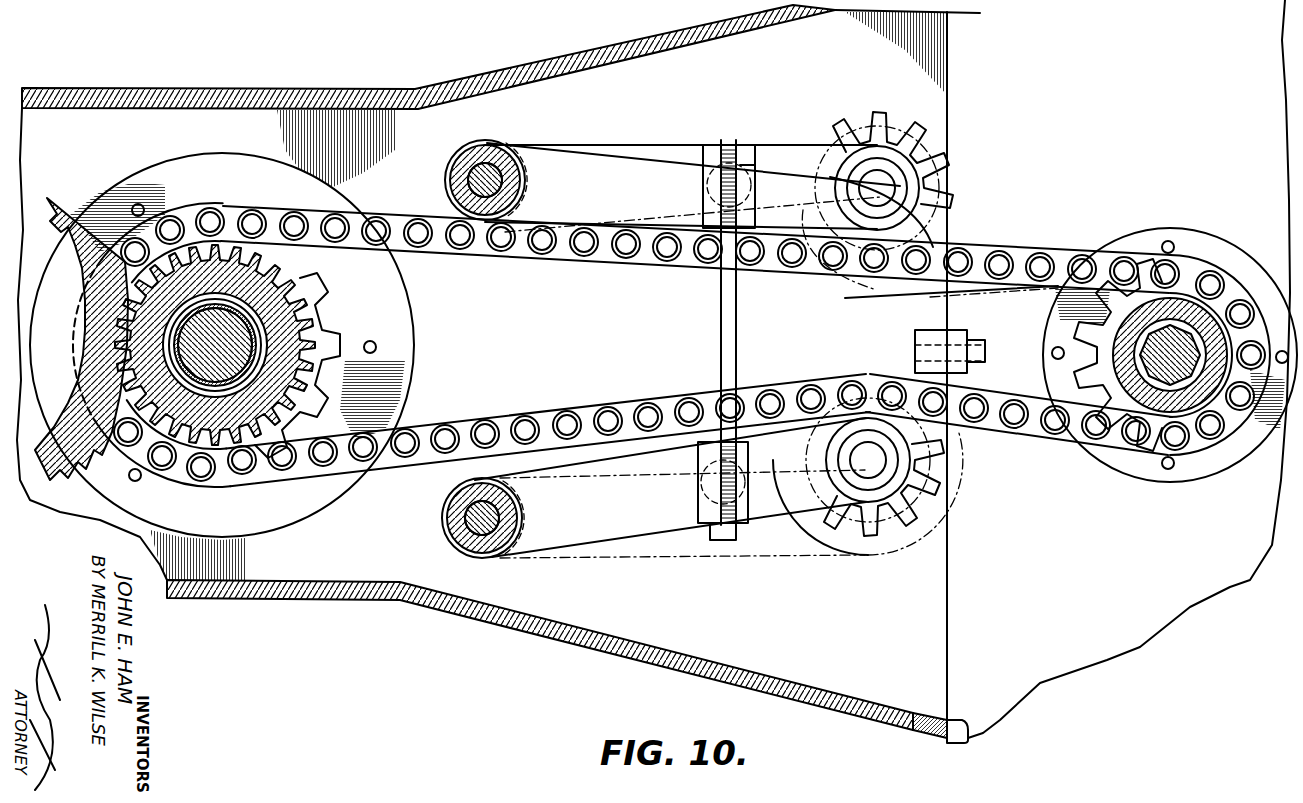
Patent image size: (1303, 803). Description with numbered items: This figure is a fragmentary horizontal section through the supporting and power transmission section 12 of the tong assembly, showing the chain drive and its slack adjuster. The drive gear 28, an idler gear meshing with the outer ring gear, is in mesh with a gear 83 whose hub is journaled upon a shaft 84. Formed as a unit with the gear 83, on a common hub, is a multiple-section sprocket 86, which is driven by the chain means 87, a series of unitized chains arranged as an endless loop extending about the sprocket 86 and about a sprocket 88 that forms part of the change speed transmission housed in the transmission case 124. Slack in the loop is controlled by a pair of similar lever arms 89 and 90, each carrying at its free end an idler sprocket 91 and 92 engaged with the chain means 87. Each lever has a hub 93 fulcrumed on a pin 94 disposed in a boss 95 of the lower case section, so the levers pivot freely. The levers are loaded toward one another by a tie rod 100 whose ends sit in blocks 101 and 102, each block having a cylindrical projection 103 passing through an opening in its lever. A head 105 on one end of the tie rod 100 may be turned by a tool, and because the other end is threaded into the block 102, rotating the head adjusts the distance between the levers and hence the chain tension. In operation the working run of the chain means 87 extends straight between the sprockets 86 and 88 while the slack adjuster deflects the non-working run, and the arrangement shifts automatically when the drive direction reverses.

The supporting and power transmission section 12 is at (530, 630).
The drive gear 28 is at (78, 213).
The gear 83 is at (270, 303).
The shaft 84 is at (255, 362).
The sprocket 86 is at (335, 332).
The chain means 87 is at (1022, 256).
The sprocket 88 is at (1085, 322).
The lever arm 89 is at (635, 160).
The lever arm 90 is at (630, 530).
The idler sprocket 91 is at (884, 146).
The idler sprocket 92 is at (915, 455).
The hub 93 is at (465, 160).
The pin 94 is at (470, 178).
The boss 95 is at (480, 140).
The tie rod 100 is at (738, 336).
The block 101 is at (698, 508).
The block 102 is at (748, 152).
The cylindrical projection 103 is at (760, 164).
The head 105 is at (724, 541).
The transmission case 124 is at (1150, 624).